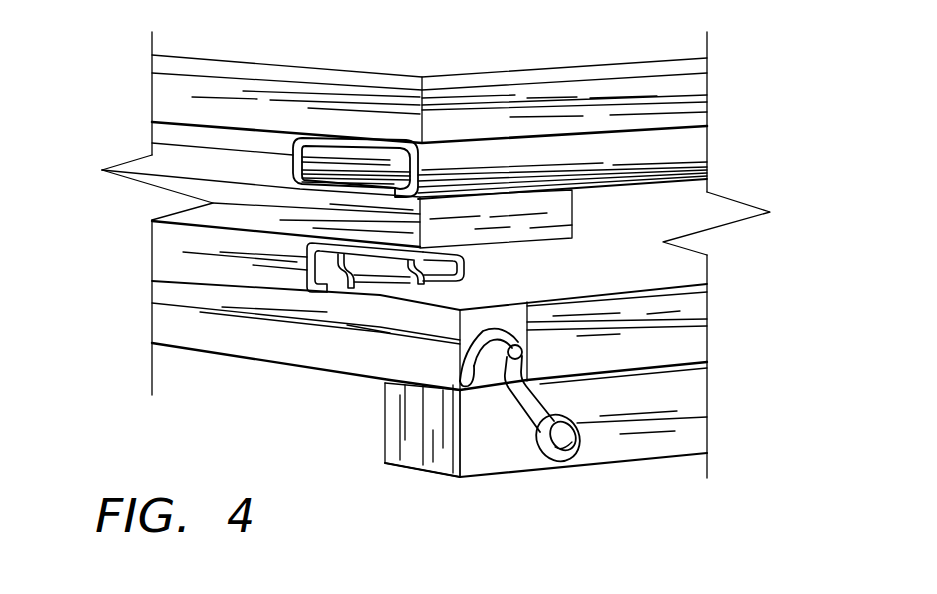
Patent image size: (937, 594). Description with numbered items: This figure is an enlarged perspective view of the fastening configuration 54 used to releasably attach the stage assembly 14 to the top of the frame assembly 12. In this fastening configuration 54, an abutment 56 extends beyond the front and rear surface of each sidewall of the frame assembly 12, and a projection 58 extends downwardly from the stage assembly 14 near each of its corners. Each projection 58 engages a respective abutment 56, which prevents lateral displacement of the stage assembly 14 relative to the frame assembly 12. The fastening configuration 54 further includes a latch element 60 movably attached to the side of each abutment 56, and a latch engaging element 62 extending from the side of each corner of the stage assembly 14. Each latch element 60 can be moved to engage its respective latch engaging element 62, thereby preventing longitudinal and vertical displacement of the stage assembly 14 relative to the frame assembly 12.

The frame assembly 12 is at (657, 496).
The stage assembly 14 is at (297, 57).
The fastening configuration 54 is at (354, 449).
The abutment 56 is at (455, 471).
The projection 58 is at (402, 453).
The latch element 60 is at (563, 461).
The latch engaging element 62 is at (496, 313).